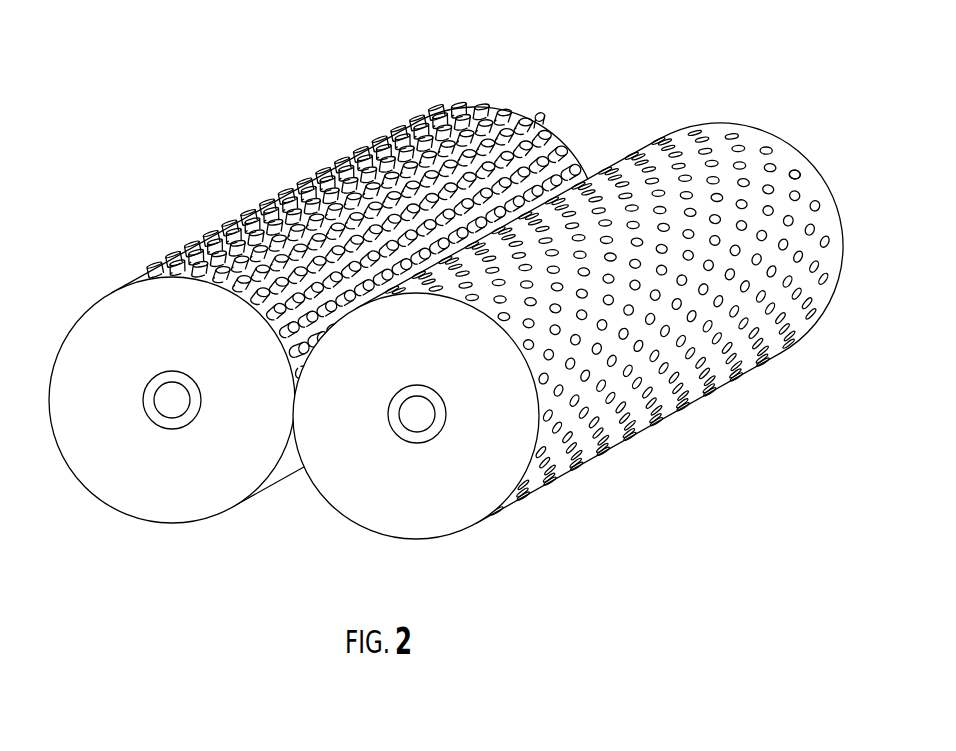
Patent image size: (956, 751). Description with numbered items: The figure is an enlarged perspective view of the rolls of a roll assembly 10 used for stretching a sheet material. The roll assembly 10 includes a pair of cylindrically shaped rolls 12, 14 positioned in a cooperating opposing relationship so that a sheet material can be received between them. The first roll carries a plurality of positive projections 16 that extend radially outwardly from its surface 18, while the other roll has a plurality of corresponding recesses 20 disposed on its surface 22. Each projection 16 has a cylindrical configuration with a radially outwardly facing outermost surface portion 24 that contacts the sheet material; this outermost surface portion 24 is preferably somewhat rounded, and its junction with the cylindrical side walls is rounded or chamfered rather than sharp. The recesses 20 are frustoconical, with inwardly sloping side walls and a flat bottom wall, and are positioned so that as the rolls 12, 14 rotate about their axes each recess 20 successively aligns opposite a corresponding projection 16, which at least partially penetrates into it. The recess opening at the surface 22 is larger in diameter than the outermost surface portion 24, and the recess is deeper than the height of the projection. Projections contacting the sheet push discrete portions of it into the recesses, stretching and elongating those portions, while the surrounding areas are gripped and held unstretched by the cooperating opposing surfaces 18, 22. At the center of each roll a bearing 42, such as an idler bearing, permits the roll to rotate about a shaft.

The roll assembly 10 is at (450, 308).
The roll 12 is at (313, 284).
The roll 14 is at (583, 347).
The positive projections 16 is at (337, 162).
The surface 18 is at (212, 275).
The recesses 20 is at (818, 205).
The surface 22 is at (797, 171).
The outermost surface portion 24 is at (540, 116).
The bearing 42 is at (187, 427).